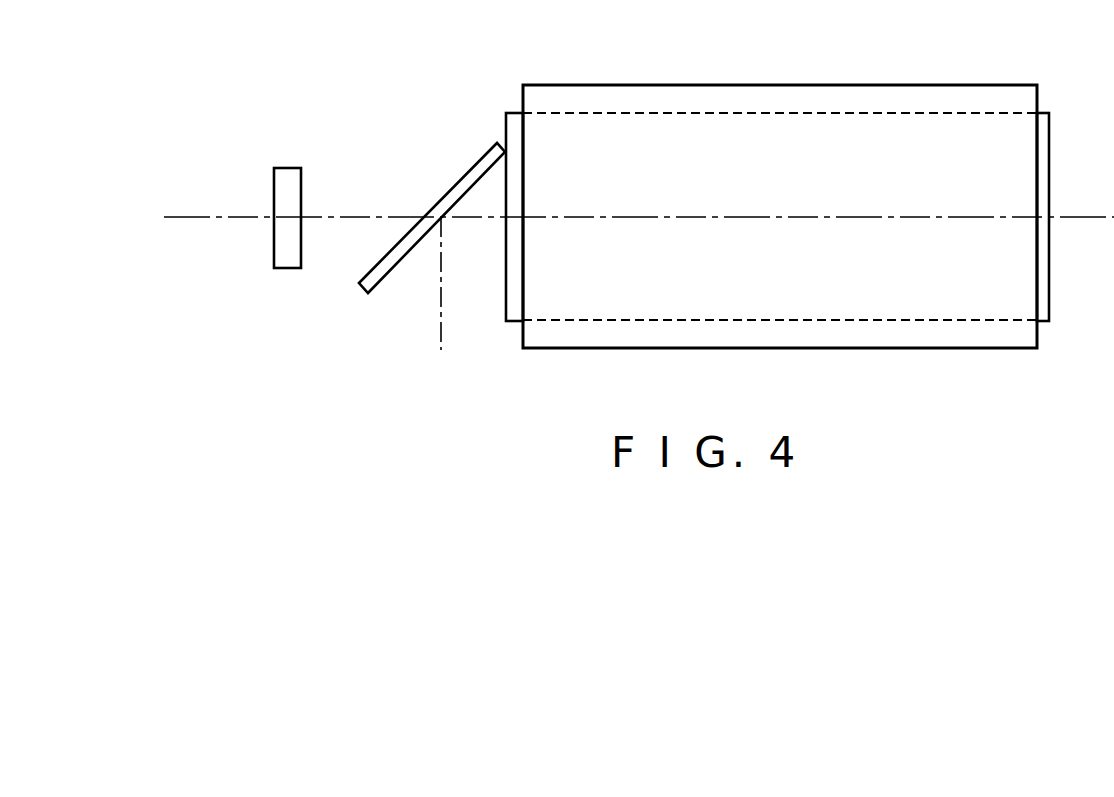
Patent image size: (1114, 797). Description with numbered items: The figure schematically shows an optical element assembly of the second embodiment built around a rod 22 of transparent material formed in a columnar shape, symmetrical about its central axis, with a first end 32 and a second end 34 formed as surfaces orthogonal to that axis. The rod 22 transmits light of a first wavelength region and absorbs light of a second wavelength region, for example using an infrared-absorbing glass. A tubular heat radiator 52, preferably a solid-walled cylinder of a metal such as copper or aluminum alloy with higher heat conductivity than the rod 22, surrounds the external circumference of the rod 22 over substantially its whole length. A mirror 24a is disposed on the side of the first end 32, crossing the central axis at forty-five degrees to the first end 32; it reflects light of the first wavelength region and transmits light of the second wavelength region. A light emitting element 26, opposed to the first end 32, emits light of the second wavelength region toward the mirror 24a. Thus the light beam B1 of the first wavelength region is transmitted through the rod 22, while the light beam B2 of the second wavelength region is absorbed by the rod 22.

The rod 22 is at (775, 113).
The mirror 24a is at (472, 166).
The light emitting element 26 is at (289, 168).
The first end 32 is at (506, 313).
The second end 34 is at (1050, 136).
The heat radiator 52 is at (874, 85).
The light beam of the first wavelength region B1 is at (438, 303).
The light beam of the second wavelength region B2 is at (354, 216).